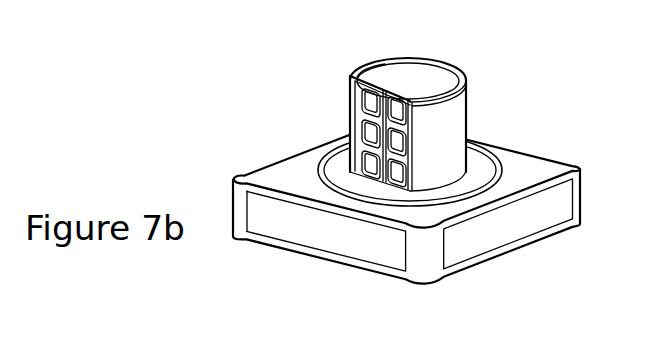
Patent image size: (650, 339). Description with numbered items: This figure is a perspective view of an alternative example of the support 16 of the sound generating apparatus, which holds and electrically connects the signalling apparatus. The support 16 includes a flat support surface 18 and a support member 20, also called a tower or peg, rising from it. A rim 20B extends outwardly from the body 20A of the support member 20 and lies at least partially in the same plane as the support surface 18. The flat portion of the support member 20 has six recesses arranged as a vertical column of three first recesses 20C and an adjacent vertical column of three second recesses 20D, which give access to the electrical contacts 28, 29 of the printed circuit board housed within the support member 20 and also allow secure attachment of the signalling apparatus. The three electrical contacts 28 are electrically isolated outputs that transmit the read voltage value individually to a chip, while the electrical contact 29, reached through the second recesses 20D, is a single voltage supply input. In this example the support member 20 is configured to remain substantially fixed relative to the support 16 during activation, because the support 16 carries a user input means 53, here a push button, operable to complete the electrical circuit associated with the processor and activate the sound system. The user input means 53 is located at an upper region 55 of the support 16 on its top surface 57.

The support 16 is at (533, 78).
The support surface 18 is at (255, 178).
The support member 20 is at (463, 102).
The body 20A is at (455, 127).
The rim 20B is at (333, 178).
The first recesses 20C is at (350, 74).
The second recesses 20D is at (423, 82).
The electrical contact 28 is at (350, 115).
The electrical contact 29 is at (445, 118).
The user input means 53 is at (410, 63).
The upper region 55 is at (353, 78).
The top surface 57 is at (386, 67).